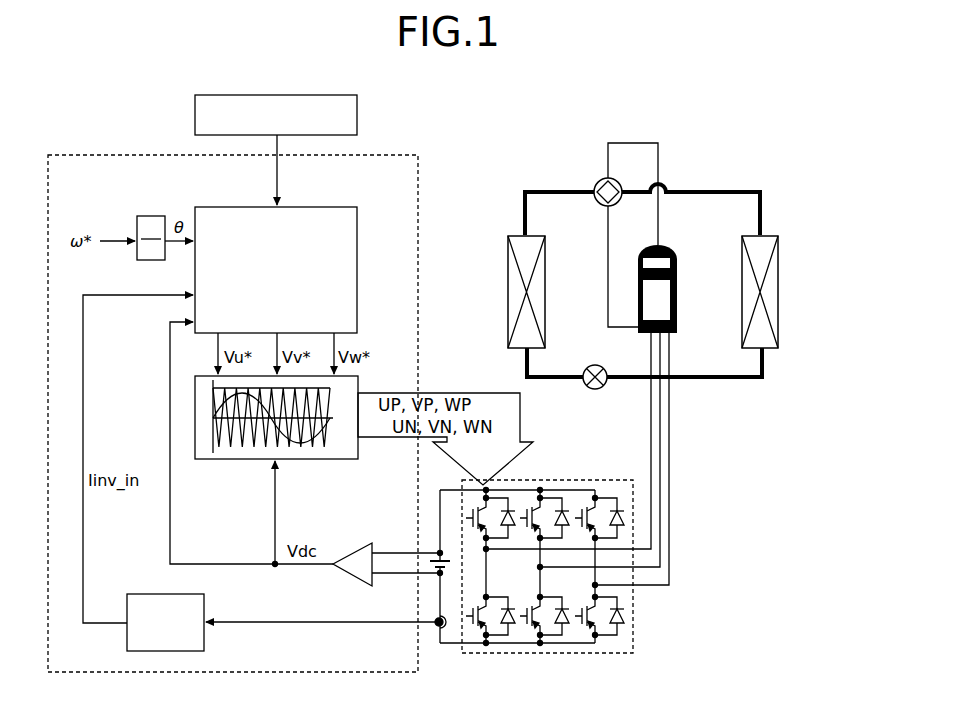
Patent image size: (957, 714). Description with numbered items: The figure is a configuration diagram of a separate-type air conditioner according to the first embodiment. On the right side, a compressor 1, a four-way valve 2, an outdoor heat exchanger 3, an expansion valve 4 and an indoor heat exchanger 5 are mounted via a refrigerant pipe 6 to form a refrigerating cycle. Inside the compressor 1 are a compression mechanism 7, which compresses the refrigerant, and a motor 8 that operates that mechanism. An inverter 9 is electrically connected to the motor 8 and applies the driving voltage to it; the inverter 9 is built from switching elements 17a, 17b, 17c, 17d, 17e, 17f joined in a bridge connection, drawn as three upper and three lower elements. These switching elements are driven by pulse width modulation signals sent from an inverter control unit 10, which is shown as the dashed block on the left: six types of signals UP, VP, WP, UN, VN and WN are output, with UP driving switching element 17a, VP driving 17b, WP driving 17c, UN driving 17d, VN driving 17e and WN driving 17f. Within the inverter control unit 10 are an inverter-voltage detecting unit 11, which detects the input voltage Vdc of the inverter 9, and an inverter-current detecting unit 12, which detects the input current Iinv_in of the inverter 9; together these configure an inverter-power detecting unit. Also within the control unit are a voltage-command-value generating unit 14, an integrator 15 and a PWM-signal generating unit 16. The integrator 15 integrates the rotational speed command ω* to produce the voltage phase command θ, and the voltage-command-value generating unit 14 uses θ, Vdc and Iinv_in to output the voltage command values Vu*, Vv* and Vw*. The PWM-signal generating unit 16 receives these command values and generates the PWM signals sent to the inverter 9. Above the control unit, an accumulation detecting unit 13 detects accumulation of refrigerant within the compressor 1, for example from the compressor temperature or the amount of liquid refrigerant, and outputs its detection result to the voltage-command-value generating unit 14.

The compressor 1 is at (660, 234).
The four-way valve 2 is at (578, 175).
The outdoor heat exchanger 3 is at (505, 262).
The expansion valve 4 is at (577, 400).
The indoor heat exchanger 5 is at (789, 266).
The refrigerant pipe 6 is at (670, 260).
The compression mechanism 7 is at (622, 279).
The motor 8 is at (603, 458).
The inverter 9 is at (571, 570).
The inverter control unit 10 is at (254, 372).
The inverter-voltage detecting unit 11 is at (386, 535).
The inverter-current detecting unit 12 is at (160, 589).
The accumulation detecting unit 13 is at (230, 115).
The voltage-command-value generating unit 14 is at (238, 256).
The integrator 15 is at (110, 227).
The PWM-signal generating unit 16 is at (233, 417).
The switching element 17a is at (518, 492).
The switching element 17b is at (567, 492).
The switching element 17c is at (619, 492).
The switching element 17d is at (475, 646).
The switching element 17e is at (527, 646).
The switching element 17f is at (582, 646).